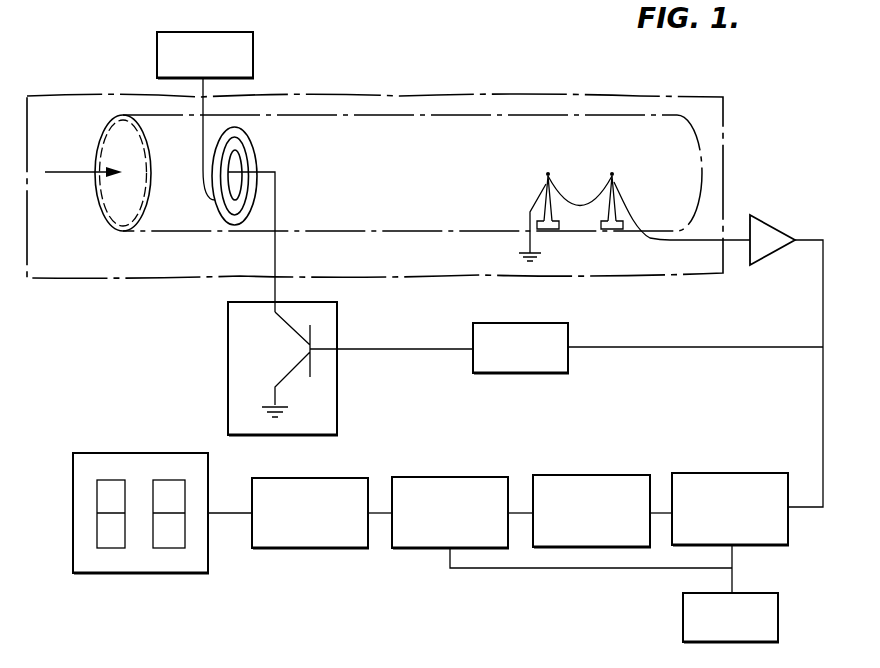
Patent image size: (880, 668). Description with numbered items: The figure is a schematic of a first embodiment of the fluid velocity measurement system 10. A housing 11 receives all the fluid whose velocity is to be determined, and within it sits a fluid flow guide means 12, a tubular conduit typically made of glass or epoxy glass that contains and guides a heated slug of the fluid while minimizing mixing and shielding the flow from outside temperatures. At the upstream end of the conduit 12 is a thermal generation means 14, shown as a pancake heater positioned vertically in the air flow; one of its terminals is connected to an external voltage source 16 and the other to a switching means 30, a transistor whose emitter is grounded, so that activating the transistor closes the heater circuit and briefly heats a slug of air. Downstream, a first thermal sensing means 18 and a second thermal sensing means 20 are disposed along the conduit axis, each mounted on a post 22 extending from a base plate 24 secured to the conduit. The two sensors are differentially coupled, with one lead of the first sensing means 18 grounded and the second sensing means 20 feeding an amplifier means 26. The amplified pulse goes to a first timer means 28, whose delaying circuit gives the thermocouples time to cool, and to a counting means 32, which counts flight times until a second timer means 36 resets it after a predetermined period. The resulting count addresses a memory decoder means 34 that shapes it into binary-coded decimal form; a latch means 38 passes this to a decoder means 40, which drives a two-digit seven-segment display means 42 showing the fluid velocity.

The fluid velocity measurement system 10 is at (440, 66).
The housing 11 is at (80, 95).
The fluid flow guide means (conduit) 12 is at (652, 112).
The thermal generation means (pancake heater) 14 is at (252, 138).
The voltage source 16 is at (253, 33).
The first thermal sensing means 18 is at (546, 172).
The second thermal sensing means 20 is at (614, 170).
The post 22 is at (607, 207).
The base plate 24 is at (618, 227).
The amplifier means 26 is at (767, 226).
The first timer means 28 is at (568, 323).
The switching means 30 is at (337, 388).
The counting means 32 is at (733, 473).
The memory decoder means 34 is at (585, 473).
The second timer means 36 is at (777, 592).
The latch means 38 is at (433, 477).
The decoder means 40 is at (368, 547).
The display means 42 is at (97, 453).